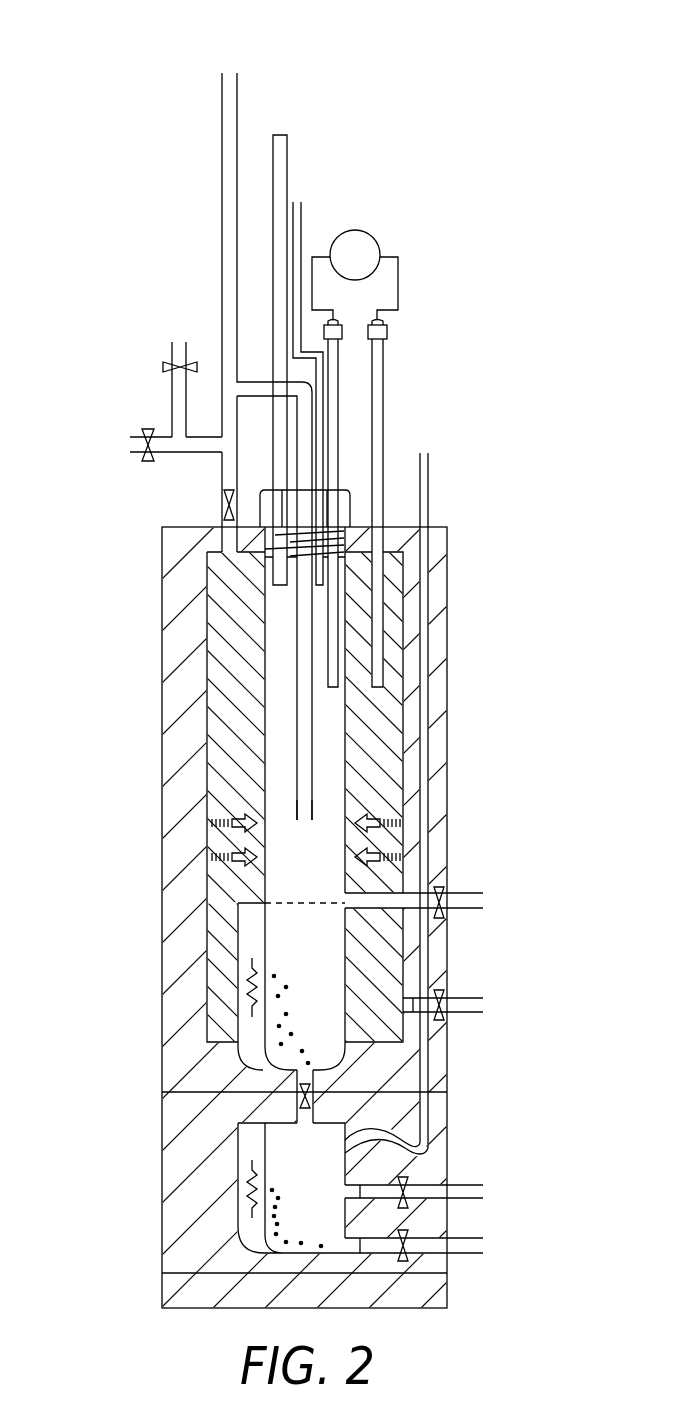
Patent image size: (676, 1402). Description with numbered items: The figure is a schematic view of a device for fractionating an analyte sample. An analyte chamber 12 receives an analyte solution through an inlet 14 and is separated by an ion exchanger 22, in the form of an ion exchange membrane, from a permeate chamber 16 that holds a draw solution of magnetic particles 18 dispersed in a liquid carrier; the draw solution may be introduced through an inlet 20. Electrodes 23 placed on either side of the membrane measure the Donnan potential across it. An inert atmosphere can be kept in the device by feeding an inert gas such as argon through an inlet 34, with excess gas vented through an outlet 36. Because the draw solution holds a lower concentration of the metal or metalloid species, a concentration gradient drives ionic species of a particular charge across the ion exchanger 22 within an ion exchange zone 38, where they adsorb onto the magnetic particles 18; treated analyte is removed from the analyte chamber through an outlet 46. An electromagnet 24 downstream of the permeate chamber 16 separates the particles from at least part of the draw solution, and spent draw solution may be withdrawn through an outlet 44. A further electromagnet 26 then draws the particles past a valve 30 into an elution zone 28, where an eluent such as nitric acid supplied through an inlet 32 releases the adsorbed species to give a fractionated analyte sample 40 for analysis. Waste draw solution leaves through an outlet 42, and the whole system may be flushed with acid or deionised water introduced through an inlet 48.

The analyte chamber 12 is at (383, 762).
The inlet 14 is at (127, 445).
The permeate chamber 16 is at (327, 708).
The magnetic particles 18 is at (295, 1010).
The inlet 20 is at (280, 133).
The ion exchanger 22 is at (263, 735).
The electrodes 23 is at (333, 367).
The electromagnet 24 is at (243, 981).
The further electromagnet 26 is at (243, 1200).
The elution zone 28 is at (345, 1170).
The valve 30 is at (298, 1097).
The inlet 32 is at (426, 452).
The inlet 34 is at (230, 72).
The outlet 36 is at (297, 200).
The ion exchange zone 38 is at (305, 815).
The fractionated analyte sample 40 is at (487, 1192).
The outlet 42 is at (487, 1246).
The outlet 44 is at (487, 901).
The outlet 46 is at (487, 1005).
The inlet 48 is at (180, 340).